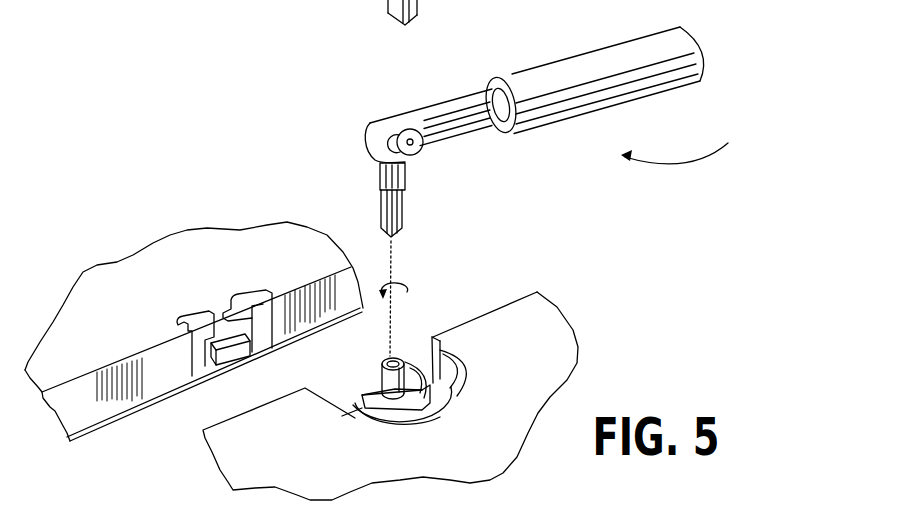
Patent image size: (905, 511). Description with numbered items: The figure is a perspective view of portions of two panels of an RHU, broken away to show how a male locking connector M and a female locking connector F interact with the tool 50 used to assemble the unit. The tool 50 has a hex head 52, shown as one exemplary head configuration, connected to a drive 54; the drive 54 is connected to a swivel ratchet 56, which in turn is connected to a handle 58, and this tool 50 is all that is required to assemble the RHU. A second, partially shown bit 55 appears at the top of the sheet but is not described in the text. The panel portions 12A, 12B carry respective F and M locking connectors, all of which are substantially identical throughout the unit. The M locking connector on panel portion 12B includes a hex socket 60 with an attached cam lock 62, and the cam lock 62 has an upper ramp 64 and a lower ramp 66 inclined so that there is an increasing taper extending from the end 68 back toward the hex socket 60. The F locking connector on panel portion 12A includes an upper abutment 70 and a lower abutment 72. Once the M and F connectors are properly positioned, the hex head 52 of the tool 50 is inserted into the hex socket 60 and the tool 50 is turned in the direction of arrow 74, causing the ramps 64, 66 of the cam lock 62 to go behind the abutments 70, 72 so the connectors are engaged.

The tool 50 is at (566, 238).
The hex head 52 is at (403, 201).
The drive 54 is at (378, 176).
The bit (partial, top of sheet) 55 is at (346, 12).
The swivel ratchet 56 is at (372, 124).
The handle 58 is at (580, 68).
The hex socket 60 is at (383, 359).
The cam lock 62 is at (455, 392).
The upper ramp 64 is at (419, 358).
The lower ramp 66 is at (377, 429).
The end 68 is at (362, 394).
The upper abutment 70 is at (221, 317).
The lower abutment 72 is at (232, 358).
The arrow 74 is at (408, 293).
The panel portion 12A is at (90, 288).
The panel portion 12B is at (553, 328).
The female locking connector F is at (152, 386).
The male locking connector M is at (463, 337).